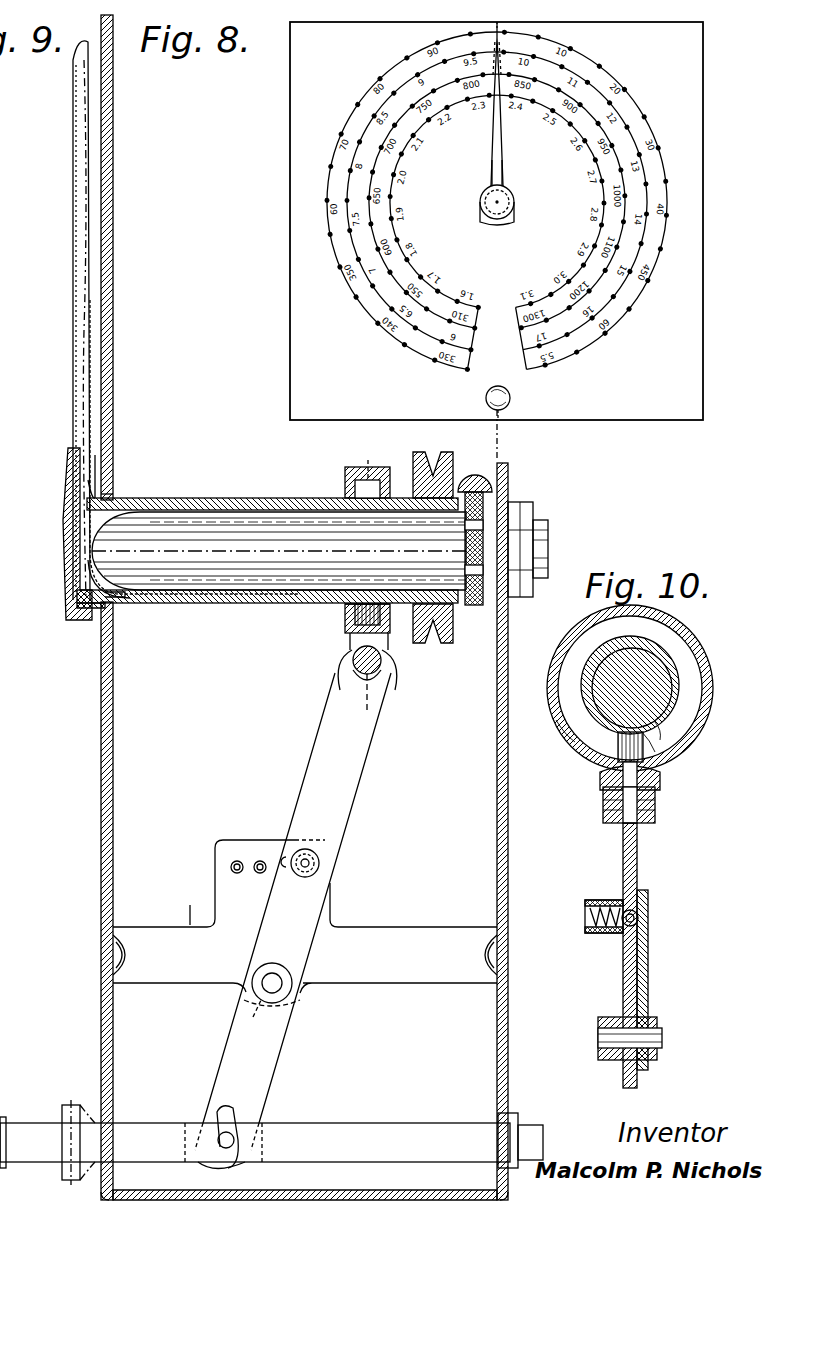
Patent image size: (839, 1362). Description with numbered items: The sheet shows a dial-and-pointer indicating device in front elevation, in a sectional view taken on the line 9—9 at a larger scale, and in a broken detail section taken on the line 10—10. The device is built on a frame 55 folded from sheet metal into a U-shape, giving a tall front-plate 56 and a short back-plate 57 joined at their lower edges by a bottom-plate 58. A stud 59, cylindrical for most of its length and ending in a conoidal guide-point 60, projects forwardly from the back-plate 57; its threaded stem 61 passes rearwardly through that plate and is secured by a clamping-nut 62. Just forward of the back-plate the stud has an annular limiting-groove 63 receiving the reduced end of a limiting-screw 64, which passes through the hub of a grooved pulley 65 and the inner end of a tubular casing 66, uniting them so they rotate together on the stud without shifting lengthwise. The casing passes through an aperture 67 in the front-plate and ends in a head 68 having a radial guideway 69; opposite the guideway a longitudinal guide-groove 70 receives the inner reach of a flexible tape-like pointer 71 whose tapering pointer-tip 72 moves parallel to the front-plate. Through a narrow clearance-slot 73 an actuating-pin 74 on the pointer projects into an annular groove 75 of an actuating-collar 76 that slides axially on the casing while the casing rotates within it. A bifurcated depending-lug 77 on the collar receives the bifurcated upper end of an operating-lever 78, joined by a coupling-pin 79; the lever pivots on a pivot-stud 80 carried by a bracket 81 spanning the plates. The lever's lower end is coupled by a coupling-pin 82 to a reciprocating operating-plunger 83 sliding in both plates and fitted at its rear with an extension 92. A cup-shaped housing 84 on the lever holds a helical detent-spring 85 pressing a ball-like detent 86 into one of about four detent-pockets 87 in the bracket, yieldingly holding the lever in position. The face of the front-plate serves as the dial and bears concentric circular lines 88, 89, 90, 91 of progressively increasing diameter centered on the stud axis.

In FIG. 8, the section line 9— 9 is at (497, 437).
In FIG. 9, the section line 9— 9 is at (490, 42).
In FIG. 8, the section line 10— 10 is at (368, 460).
In FIG. 8, the frame 55 is at (101, 808).
In FIG. 9, the frame 55 is at (290, 268).
In FIG. 8, the front-plate 56 is at (113, 192).
In FIG. 9, the front-plate 56 is at (290, 158).
In FIG. 8, the back-plate 57 is at (497, 715).
In FIG. 8, the bottom-plate 58 is at (345, 1190).
In FIG. 8, the stud 59 is at (248, 592).
In FIG. 10, the stud 59 is at (600, 690).
In FIG. 8, the guide-point 60 is at (143, 548).
In FIG. 8, the threaded stem 61 is at (548, 550).
In FIG. 8, the clamping-nut 62 is at (530, 506).
In FIG. 8, the limiting-groove 63 is at (476, 600).
In FIG. 8, the limiting-screw 64 is at (484, 484).
In FIG. 8, the grooved pulley 65 is at (438, 447).
In FIG. 8, the tubular casing 66 is at (243, 498).
In FIG. 9, the tubular casing 66 is at (492, 222).
In FIG. 10, the tubular casing 66 is at (586, 652).
In FIG. 8, the aperture 67 is at (108, 498).
In FIG. 8, the head 68 is at (65, 545).
In FIG. 9, the head 68 is at (481, 203).
In FIG. 8, the guideway 69 is at (98, 492).
In FIG. 8, the guide-groove 70 is at (112, 603).
In FIG. 10, the guide-groove 70 is at (662, 728).
In FIG. 8, the tape-like pointer 71 is at (75, 424).
In FIG. 9, the tape-like pointer 71 is at (492, 158).
In FIG. 10, the tape-like pointer 71 is at (650, 735).
In FIG. 8, the pointer-tip 72 is at (73, 252).
In FIG. 9, the pointer-tip 72 is at (492, 108).
In FIG. 8, the clearance-slot 73 is at (155, 603).
In FIG. 8, the actuating-pin 74 is at (345, 614).
In FIG. 10, the actuating-pin 74 is at (618, 748).
In FIG. 8, the groove 75 is at (355, 488).
In FIG. 10, the groove 75 is at (573, 722).
In FIG. 8, the actuating-collar 76 is at (348, 472).
In FIG. 10, the actuating-collar 76 is at (552, 718).
In FIG. 8, the depending-lug 77 is at (350, 668).
In FIG. 10, the depending-lug 77 is at (600, 782).
In FIG. 8, the operating-lever 78 is at (309, 766).
In FIG. 10, the operating-lever 78 is at (637, 860).
In FIG. 8, the coupling-pin 79 is at (372, 672).
In FIG. 10, the coupling-pin 79 is at (603, 802).
In FIG. 8, the pivot-stud 80 is at (262, 977).
In FIG. 10, the pivot-stud 80 is at (598, 1040).
In FIG. 8, the bracket 81 is at (216, 900).
In FIG. 10, the bracket 81 is at (648, 978).
In FIG. 8, the coupling-pin 82 is at (222, 1134).
In FIG. 8, the operating-plunger 83 is at (22, 1123).
In FIG. 9, the operating-plunger 83 is at (486, 398).
In FIG. 8, the cup-shaped housing 84 is at (282, 870).
In FIG. 10, the cup-shaped housing 84 is at (610, 900).
In FIG. 8, the detent-spring 85 is at (305, 872).
In FIG. 10, the detent-spring 85 is at (600, 933).
In FIG. 8, the ball-like detent 86 is at (320, 863).
In FIG. 10, the ball-like detent 86 is at (640, 912).
In FIG. 8, the detent-pockets 87 is at (260, 860).
In FIG. 10, the detent-pockets 87 is at (640, 924).
In FIG. 9, the circular line 88 is at (330, 250).
In FIG. 9, the circular line 89 is at (355, 283).
In FIG. 9, the circular line 90 is at (375, 300).
In FIG. 9, the circular line 91 is at (395, 312).
In FIG. 8, the extension 92 is at (537, 1126).